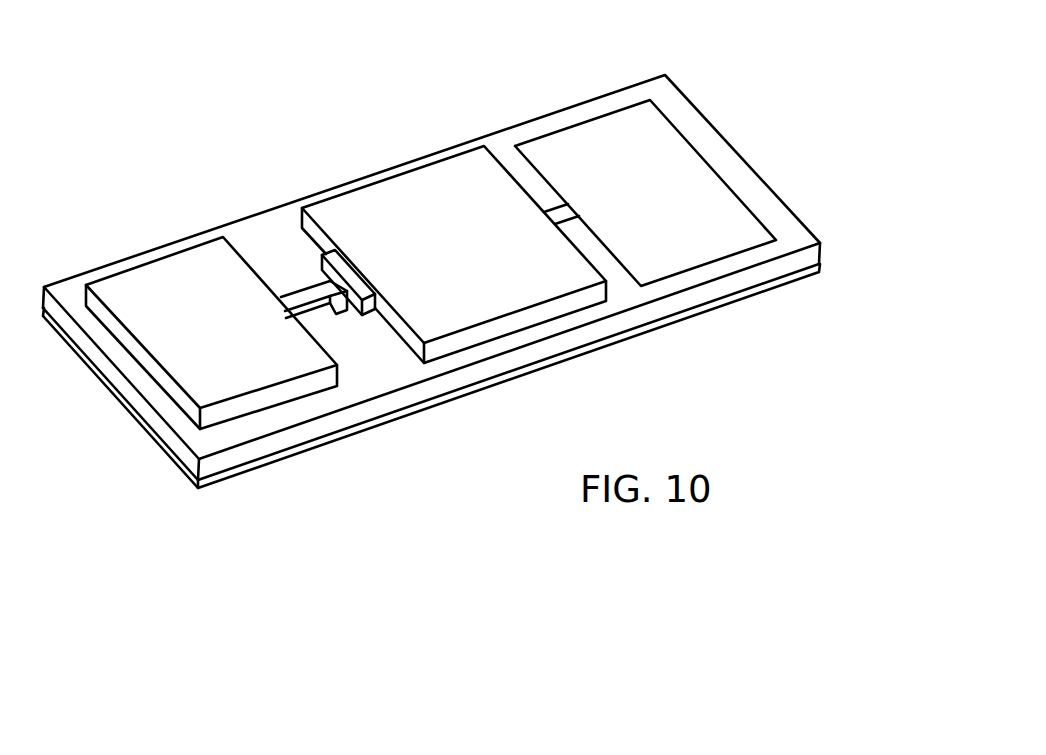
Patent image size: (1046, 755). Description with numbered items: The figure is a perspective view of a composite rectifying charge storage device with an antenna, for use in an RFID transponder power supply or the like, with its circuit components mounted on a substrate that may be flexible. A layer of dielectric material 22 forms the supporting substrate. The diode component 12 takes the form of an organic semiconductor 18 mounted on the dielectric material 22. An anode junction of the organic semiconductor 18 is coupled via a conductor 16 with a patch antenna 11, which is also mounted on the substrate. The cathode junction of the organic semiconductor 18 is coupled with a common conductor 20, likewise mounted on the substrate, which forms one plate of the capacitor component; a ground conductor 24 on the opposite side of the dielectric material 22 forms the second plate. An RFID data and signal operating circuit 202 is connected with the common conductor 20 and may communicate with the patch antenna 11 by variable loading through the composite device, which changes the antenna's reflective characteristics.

The patch antenna 11 is at (172, 270).
The diode component 12 is at (404, 205).
The conductor 16 is at (307, 295).
The organic semiconductor 18 is at (340, 260).
The common conductor 20 is at (422, 198).
The dielectric material 22 is at (527, 360).
The ground conductor 24 is at (410, 412).
The RFID data and signal operating circuit 202 is at (606, 133).